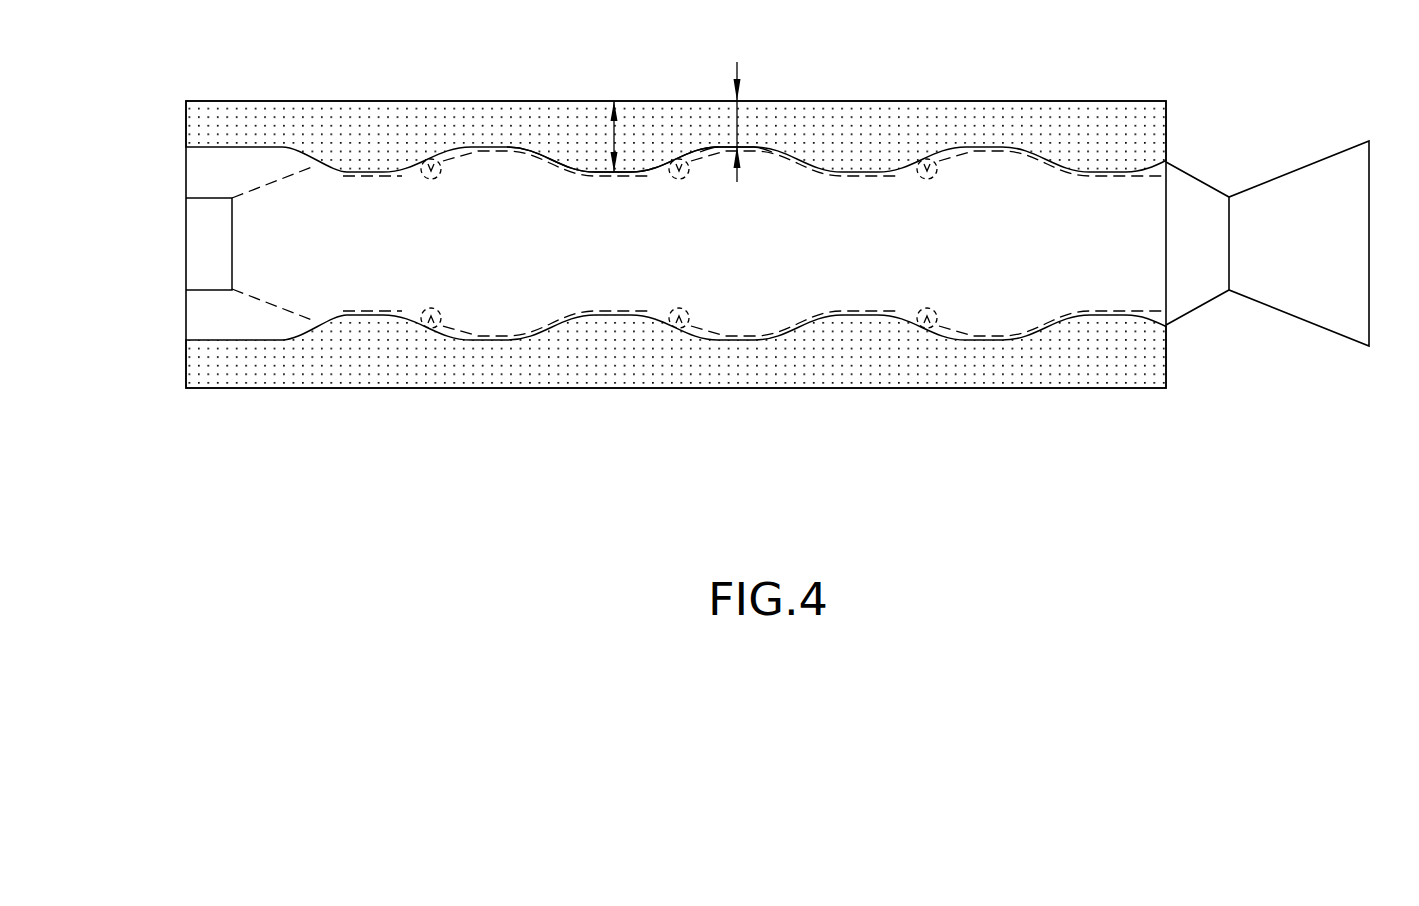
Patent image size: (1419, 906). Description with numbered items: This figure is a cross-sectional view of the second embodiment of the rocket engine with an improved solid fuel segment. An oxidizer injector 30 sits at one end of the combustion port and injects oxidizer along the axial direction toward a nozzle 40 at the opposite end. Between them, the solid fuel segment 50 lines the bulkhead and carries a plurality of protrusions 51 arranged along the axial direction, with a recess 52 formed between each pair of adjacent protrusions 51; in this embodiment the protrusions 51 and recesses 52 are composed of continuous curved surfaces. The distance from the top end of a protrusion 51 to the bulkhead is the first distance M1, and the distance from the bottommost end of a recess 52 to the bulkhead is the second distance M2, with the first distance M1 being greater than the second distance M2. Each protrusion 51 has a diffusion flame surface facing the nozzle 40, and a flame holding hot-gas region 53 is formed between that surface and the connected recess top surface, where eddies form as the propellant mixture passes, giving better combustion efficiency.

The oxidizer injector 30 is at (204, 239).
The nozzle 40 is at (1244, 156).
The solid fuel segment 50 is at (336, 98).
The protrusion 51 is at (633, 160).
The recess 52 is at (751, 127).
The flame holding hot-gas region 53 is at (452, 152).
The first distance M1 is at (611, 135).
The second distance M2 is at (735, 122).